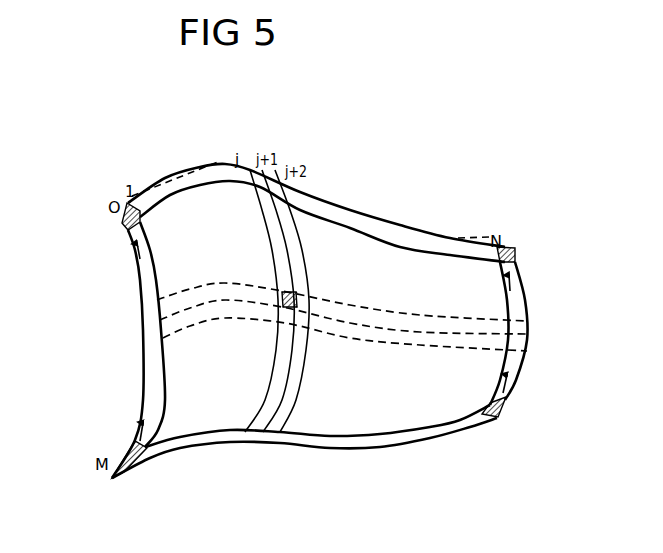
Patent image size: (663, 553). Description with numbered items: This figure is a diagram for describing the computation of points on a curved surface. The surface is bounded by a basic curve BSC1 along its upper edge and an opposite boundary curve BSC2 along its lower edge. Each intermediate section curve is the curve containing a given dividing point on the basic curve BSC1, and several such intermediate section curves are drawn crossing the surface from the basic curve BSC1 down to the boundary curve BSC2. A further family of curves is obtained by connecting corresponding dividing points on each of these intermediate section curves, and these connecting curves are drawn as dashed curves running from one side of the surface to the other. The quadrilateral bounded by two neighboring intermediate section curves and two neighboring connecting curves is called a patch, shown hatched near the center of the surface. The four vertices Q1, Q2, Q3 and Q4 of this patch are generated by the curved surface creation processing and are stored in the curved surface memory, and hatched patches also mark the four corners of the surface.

The basic curve BSC1 is at (400, 223).
The second boundary space curve BSC2 is at (335, 445).
The vertex of patch Q1 is at (283, 307).
The vertex of patch Q2 is at (283, 292).
The vertex of patch Q3 is at (297, 293).
The vertex of patch Q4 is at (297, 307).